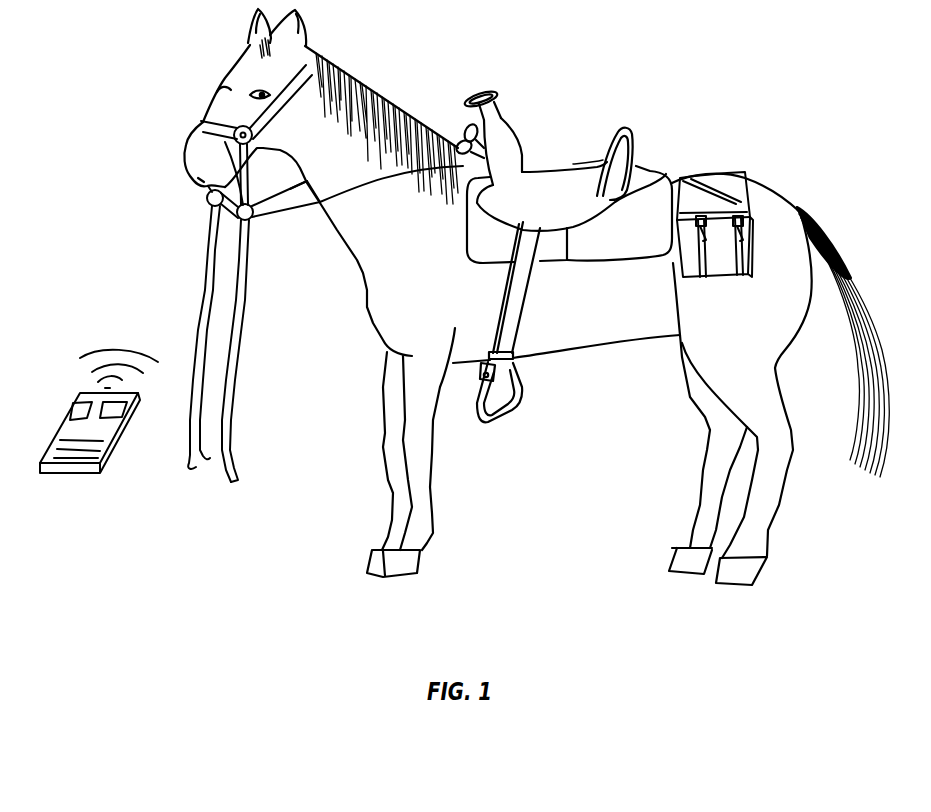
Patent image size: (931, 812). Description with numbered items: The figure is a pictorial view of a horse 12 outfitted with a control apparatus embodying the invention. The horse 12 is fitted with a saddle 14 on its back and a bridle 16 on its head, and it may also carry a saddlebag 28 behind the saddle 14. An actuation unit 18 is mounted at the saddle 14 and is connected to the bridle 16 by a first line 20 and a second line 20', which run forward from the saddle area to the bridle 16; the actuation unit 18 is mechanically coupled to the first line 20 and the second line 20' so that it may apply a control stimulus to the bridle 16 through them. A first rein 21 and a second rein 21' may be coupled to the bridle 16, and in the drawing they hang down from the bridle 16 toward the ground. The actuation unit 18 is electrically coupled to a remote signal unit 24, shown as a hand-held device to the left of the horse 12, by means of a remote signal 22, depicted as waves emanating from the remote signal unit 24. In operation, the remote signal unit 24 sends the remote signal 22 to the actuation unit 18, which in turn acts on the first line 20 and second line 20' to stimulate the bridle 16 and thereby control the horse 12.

The horse 12 is at (352, 77).
The saddle 14 is at (530, 153).
The bridle 16 is at (205, 124).
The actuation unit 18 is at (496, 110).
The first line 20 is at (357, 216).
The second line 20' is at (310, 229).
The first rein 21 is at (181, 337).
The second rein 21' is at (268, 351).
The remote signal 22 is at (114, 351).
The remote signal unit 24 is at (88, 476).
The saddlebag 28 is at (730, 180).